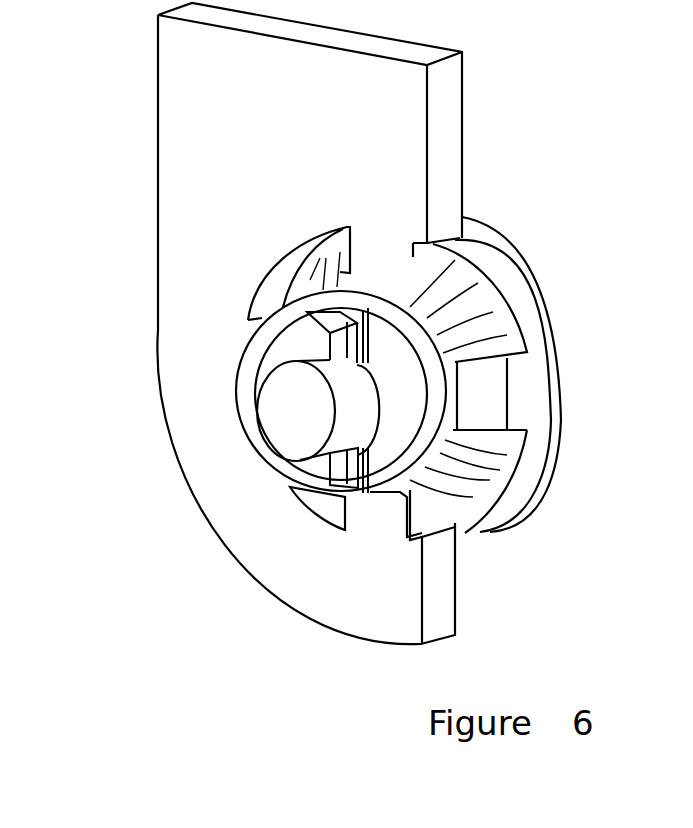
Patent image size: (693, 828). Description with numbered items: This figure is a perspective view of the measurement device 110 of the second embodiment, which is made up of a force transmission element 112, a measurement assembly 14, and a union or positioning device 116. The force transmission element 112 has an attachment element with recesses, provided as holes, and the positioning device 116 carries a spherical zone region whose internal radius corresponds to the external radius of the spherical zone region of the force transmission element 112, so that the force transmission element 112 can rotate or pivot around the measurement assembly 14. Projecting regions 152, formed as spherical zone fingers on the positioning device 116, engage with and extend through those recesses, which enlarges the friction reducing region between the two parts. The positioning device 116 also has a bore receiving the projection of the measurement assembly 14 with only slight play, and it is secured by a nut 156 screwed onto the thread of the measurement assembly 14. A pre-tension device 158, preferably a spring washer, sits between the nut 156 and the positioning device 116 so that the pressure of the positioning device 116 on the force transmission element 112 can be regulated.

The measurement device 110 is at (518, 93).
The force transmission element 112 is at (157, 183).
The projecting regions 152 is at (498, 320).
The nut 156 is at (260, 353).
The pre-tension device 158 is at (300, 310).
The measurement assembly 14 is at (288, 415).
The positioning device 116 is at (388, 445).